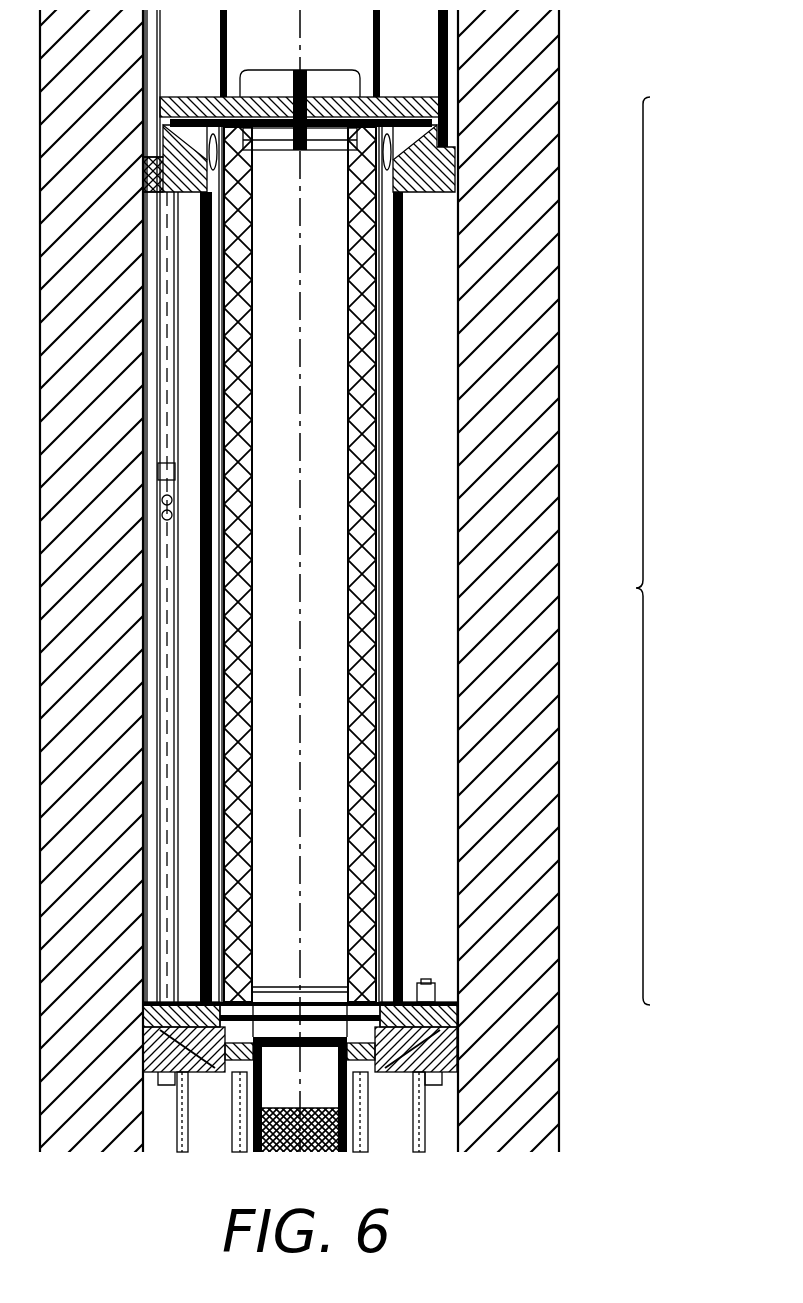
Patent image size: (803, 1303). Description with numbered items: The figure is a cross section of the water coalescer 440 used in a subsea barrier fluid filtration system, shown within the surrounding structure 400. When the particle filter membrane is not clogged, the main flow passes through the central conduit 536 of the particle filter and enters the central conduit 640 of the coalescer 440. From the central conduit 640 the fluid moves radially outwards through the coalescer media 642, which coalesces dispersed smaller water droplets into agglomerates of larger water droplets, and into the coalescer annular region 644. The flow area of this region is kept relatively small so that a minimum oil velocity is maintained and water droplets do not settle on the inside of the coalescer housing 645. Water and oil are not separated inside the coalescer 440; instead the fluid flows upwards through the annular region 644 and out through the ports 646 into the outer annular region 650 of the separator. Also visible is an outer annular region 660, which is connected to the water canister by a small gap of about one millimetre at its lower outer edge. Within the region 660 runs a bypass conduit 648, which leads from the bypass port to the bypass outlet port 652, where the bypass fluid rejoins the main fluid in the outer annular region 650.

The wellbore / formation 400 is at (104, 474).
The water coalescer 440 is at (671, 551).
The central conduit 536 is at (310, 1098).
The central conduit 640 is at (322, 640).
The coalescer media 642 is at (237, 528).
The coalescer annular region 644 is at (385, 482).
The coalescer housing 645 is at (400, 543).
The ports 646 is at (440, 137).
The bypass conduit 648 is at (167, 290).
The outer annular region 650 is at (452, 45).
The bypass outlet port 652 is at (143, 145).
The outer annular region 660 is at (433, 297).